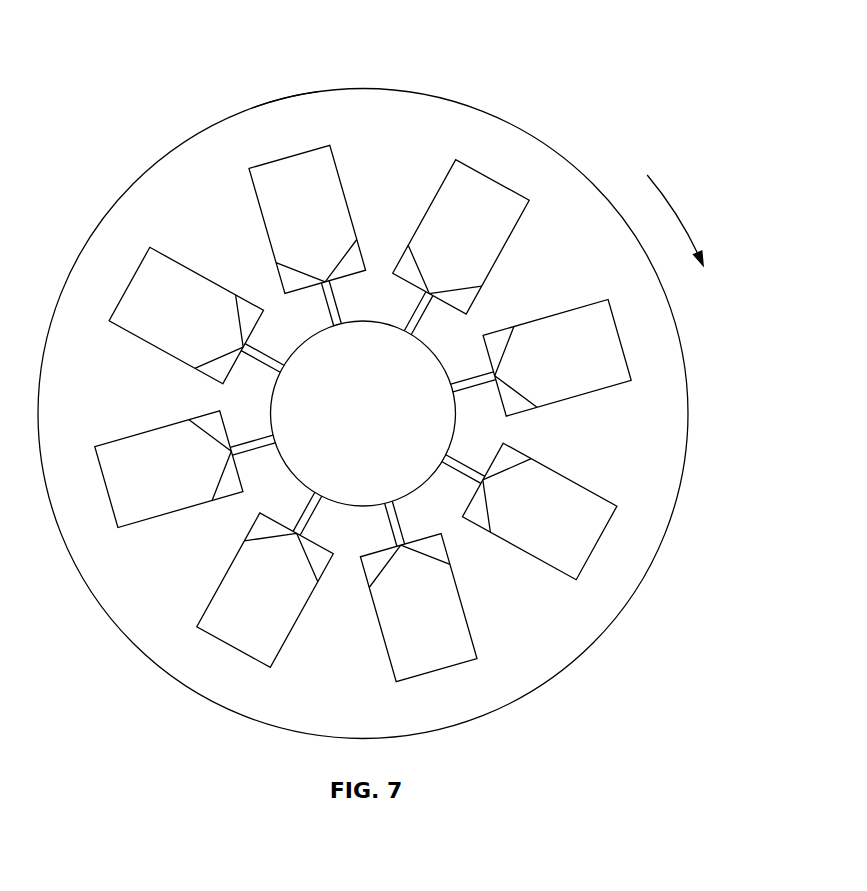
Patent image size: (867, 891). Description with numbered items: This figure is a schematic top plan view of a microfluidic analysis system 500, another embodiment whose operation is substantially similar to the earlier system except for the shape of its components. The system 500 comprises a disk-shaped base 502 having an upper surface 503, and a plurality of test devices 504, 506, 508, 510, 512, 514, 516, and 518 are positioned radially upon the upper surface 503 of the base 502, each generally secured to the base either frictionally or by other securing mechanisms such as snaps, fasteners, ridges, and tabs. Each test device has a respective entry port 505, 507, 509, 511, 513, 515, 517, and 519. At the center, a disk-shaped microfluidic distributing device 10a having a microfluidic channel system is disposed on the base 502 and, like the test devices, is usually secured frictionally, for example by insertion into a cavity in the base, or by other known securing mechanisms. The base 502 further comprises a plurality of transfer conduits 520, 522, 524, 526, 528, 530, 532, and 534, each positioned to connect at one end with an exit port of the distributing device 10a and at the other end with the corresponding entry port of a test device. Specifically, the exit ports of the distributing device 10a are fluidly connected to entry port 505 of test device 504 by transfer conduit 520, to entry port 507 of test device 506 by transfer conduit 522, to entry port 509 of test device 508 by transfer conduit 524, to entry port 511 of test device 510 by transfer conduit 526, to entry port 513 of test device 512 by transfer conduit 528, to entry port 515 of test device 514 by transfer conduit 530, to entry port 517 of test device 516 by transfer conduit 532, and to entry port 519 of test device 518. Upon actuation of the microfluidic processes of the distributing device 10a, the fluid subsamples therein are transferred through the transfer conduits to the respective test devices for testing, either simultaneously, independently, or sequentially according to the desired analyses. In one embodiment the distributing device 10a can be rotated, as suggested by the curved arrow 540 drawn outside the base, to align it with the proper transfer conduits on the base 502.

The microfluidic analysis system 500 is at (153, 46).
The base 502 is at (497, 117).
The upper surface 503 is at (278, 115).
The microfluidic distributing device 10a is at (345, 427).
The test device 504 is at (495, 184).
The entry port 505 is at (430, 294).
The test device 506 is at (622, 345).
The entry port 507 is at (495, 378).
The test device 508 is at (597, 548).
The entry port 509 is at (483, 485).
The test device 510 is at (432, 678).
The entry port 511 is at (400, 553).
The test device 512 is at (228, 657).
The entry port 513 is at (294, 534).
The test device 514 is at (100, 488).
The entry port 515 is at (229, 451).
The test device 516 is at (127, 283).
The entry port 517 is at (243, 348).
The test device 518 is at (293, 157).
The entry port 519 is at (327, 282).
The transfer conduit 520 is at (417, 328).
The transfer conduit 522 is at (477, 393).
The transfer conduit 524 is at (450, 477).
The transfer conduit 526 is at (383, 518).
The transfer conduit 528 is at (303, 503).
The transfer conduit 530 is at (262, 436).
The transfer conduit 532 is at (270, 357).
The transfer conduit 534 is at (343, 313).
The rotation direction arrow 540 is at (678, 212).